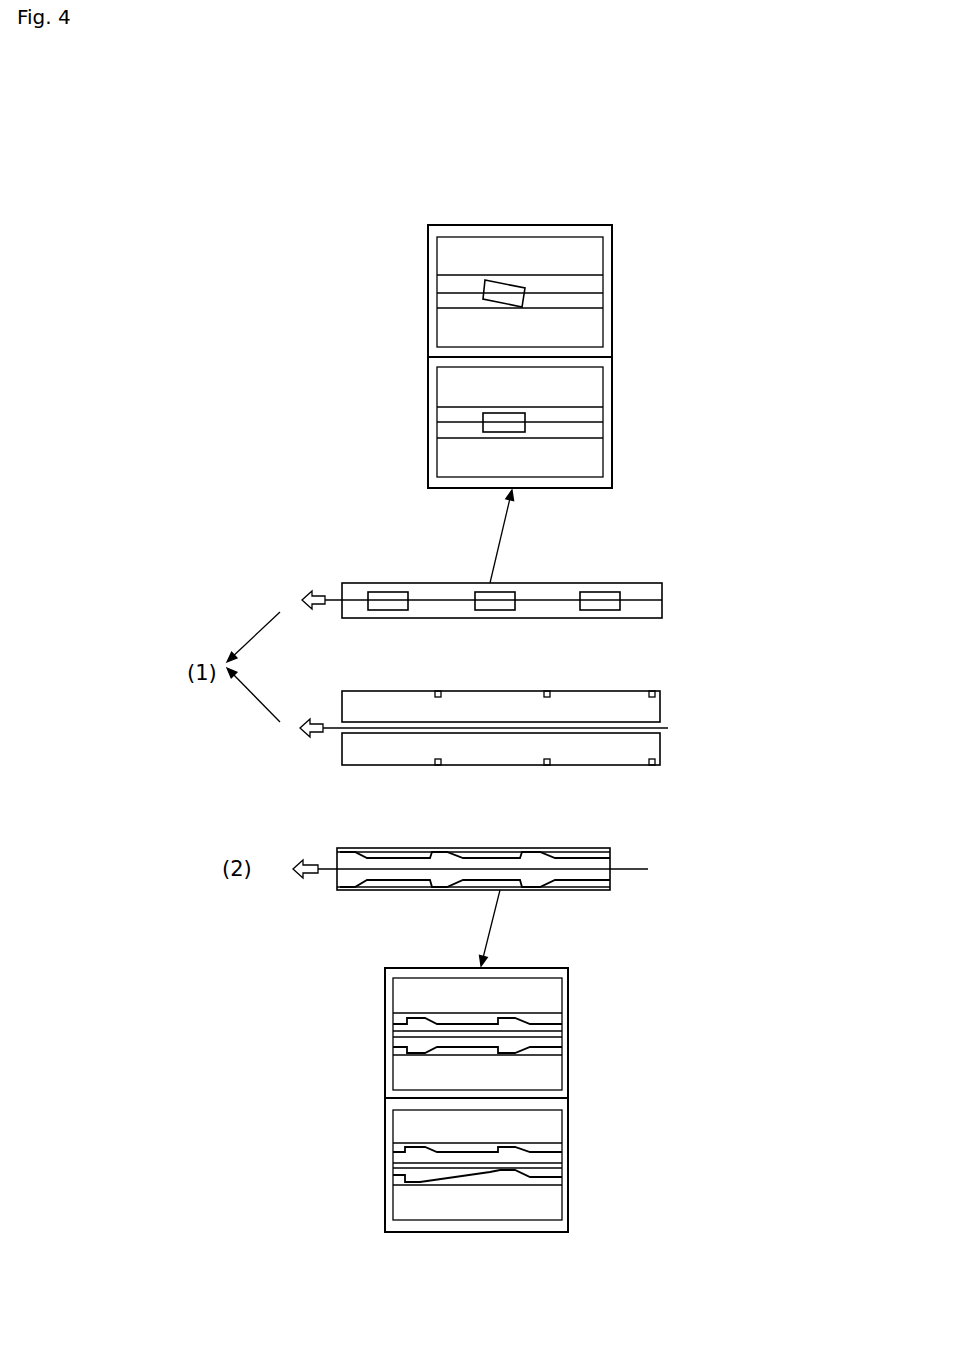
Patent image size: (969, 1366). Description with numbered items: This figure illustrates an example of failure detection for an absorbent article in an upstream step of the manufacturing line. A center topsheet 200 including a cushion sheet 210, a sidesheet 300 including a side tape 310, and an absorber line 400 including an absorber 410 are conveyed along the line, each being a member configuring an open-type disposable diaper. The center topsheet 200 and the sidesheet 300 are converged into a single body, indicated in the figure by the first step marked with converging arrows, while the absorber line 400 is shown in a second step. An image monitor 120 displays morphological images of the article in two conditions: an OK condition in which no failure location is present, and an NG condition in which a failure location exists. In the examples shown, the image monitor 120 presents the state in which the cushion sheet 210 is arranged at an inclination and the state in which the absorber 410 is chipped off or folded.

The image monitor 120 is at (593, 225).
The center topsheet 200 is at (648, 590).
The cushion sheet 210 is at (507, 278).
The sidesheet 300 is at (619, 692).
The side tape 310 is at (660, 692).
The absorber line 400 is at (595, 850).
The absorber 410 is at (493, 850).